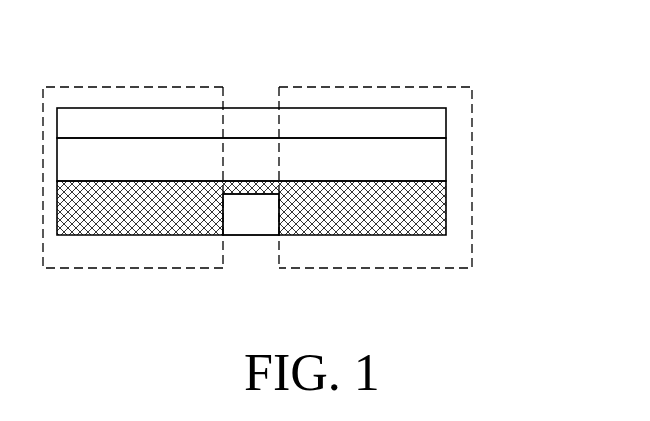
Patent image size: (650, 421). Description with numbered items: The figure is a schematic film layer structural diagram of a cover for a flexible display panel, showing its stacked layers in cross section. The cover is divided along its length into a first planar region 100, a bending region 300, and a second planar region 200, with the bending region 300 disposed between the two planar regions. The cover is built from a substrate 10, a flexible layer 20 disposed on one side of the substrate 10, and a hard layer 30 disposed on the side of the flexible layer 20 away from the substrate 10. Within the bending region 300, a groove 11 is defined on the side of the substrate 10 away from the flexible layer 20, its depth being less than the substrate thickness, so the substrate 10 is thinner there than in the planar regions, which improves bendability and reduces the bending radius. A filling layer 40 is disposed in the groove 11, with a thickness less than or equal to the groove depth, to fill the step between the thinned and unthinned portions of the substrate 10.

The substrate 10 is at (427, 217).
The groove 11 is at (223, 208).
The flexible layer 20 is at (427, 165).
The hard layer 30 is at (427, 126).
The filling layer 40 is at (265, 217).
The first planar region 100 is at (160, 98).
The second planar region 200 is at (338, 98).
The bending region 300 is at (255, 98).